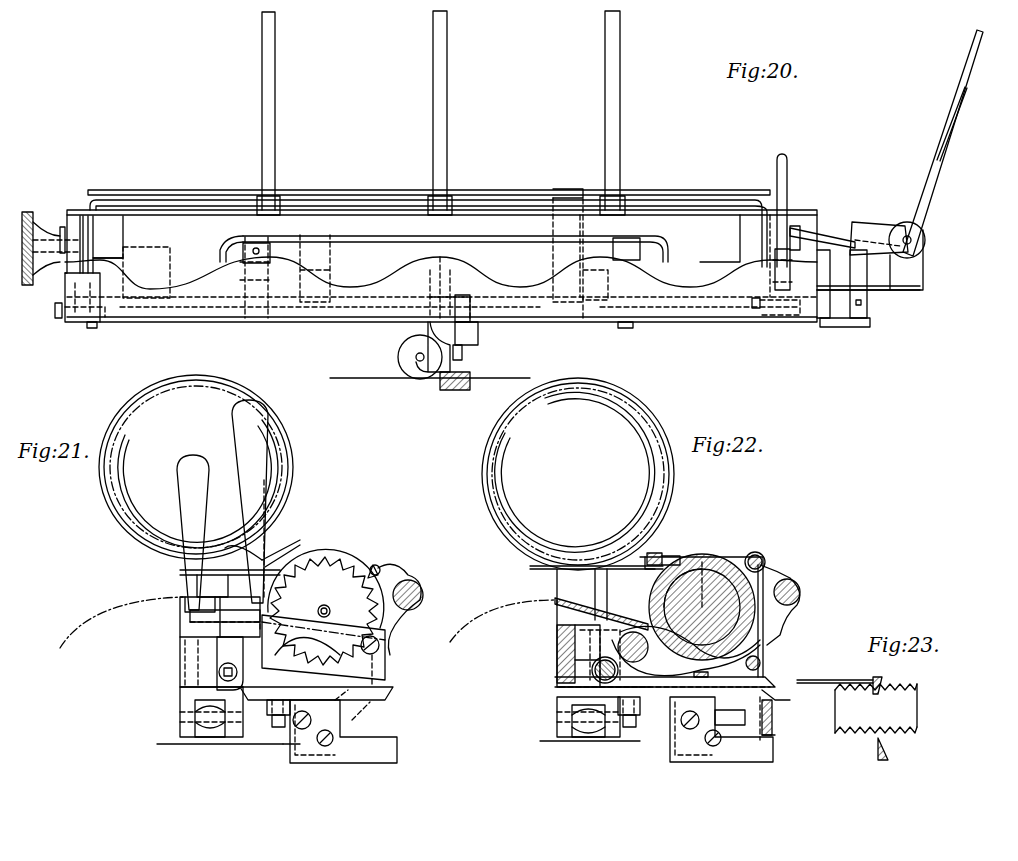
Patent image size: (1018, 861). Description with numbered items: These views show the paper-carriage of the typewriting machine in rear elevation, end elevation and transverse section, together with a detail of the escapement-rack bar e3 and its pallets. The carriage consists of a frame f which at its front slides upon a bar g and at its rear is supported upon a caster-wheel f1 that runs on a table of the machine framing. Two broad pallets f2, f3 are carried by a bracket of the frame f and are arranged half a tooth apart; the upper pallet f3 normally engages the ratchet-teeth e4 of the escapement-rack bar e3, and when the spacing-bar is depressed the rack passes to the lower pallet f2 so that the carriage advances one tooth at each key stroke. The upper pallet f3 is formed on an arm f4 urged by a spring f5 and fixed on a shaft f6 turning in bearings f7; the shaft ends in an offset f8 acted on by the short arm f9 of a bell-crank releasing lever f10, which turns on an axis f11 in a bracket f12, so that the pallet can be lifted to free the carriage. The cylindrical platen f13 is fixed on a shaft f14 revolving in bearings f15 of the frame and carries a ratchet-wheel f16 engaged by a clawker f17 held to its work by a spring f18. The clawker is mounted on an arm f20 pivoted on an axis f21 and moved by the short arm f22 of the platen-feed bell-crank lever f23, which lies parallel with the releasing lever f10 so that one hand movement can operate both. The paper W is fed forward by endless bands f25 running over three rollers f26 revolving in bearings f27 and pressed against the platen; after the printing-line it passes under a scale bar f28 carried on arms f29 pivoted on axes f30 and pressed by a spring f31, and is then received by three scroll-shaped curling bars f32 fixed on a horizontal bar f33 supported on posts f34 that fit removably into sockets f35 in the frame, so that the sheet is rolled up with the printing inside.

In FIG. 20, the frame f is at (441, 266).
In FIG. 21, the frame f is at (330, 630).
In FIG. 22, the frame f is at (565, 672).
In FIG. 20, the caster-wheel f1 is at (400, 345).
In FIG. 21, the caster-wheel f1 is at (212, 738).
In FIG. 22, the caster-wheel f1 is at (590, 738).
In FIG. 20, the lower pallet f2 is at (452, 390).
In FIG. 21, the lower pallet f2 is at (343, 731).
In FIG. 22, the lower pallet f2 is at (721, 729).
In FIG. 23, the lower pallet f2 is at (890, 752).
In FIG. 20, the upper pallet f3 is at (480, 328).
In FIG. 21, the upper pallet f3 is at (358, 690).
In FIG. 23, the upper pallet f3 is at (884, 680).
In FIG. 20, the arm f4 is at (468, 302).
In FIG. 21, the arm f4 is at (269, 710).
In FIG. 22, the arm f4 is at (631, 705).
In FIG. 20, the spring f5 is at (595, 322).
In FIG. 22, the spring f5 is at (724, 715).
In FIG. 23, the spring f5 is at (852, 679).
In FIG. 20, the shaft or spindle f6 is at (845, 327).
In FIG. 21, the shaft or spindle f6 is at (218, 674).
In FIG. 22, the shaft or spindle f6 is at (595, 685).
In FIG. 20, the bearings f7 is at (425, 290).
In FIG. 21, the bearings f7 is at (209, 662).
In FIG. 22, the bearings f7 is at (556, 660).
In FIG. 20, the offset f8 is at (850, 270).
In FIG. 21, the offset f8 is at (215, 650).
In FIG. 20, the short arm f9 is at (878, 228).
In FIG. 22, the short arm f9 is at (712, 680).
In FIG. 20, the bell-crank-releasing lever f10 is at (950, 135).
In FIG. 21, the bell-crank-releasing lever f10 is at (193, 532).
In FIG. 20, the axis of motion f11 is at (912, 240).
In FIG. 21, the axis of motion f11 is at (188, 626).
In FIG. 20, the bracket f12 is at (908, 290).
In FIG. 21, the bracket f12 is at (190, 614).
In FIG. 20, the cylindrical platen f13 is at (408, 253).
In FIG. 21, the cylindrical platen f13 is at (330, 560).
In FIG. 22, the cylindrical platen f13 is at (728, 562).
In FIG. 20, the shaft or spindle f14 is at (78, 244).
In FIG. 21, the shaft or spindle f14 is at (324, 611).
In FIG. 22, the shaft or spindle f14 is at (707, 556).
In FIG. 20, the bearings f15 is at (62, 236).
In FIG. 21, the bearings f15 is at (330, 601).
In FIG. 20, the ratchet-wheel f16 is at (762, 198).
In FIG. 21, the ratchet-wheel f16 is at (323, 613).
In FIG. 20, the clawker or driver f17 is at (788, 160).
In FIG. 20, the spring f18 is at (775, 268).
In FIG. 20, the arm or lever f20 is at (800, 230).
In FIG. 21, the arm or lever f20 is at (380, 650).
In FIG. 21, the axis of motion f21 is at (385, 668).
In FIG. 20, the short arm f22 is at (830, 236).
In FIG. 20, the bell-crank lever f23 is at (974, 46).
In FIG. 21, the bell-crank lever f23 is at (250, 501).
In FIG. 20, the endless bands f25 is at (454, 268).
In FIG. 22, the endless bands f25 is at (758, 555).
In FIG. 20, the rollers f26 is at (514, 190).
In FIG. 21, the rollers f26 is at (335, 655).
In FIG. 22, the rollers f26 is at (630, 630).
In FIG. 20, the bearings f27 is at (255, 210).
In FIG. 21, the bearings f27 is at (376, 562).
In FIG. 20, the bar f28 is at (146, 193).
In FIG. 21, the bar f28 is at (280, 555).
In FIG. 22, the bar f28 is at (668, 553).
In FIG. 20, the arms f29 is at (188, 272).
In FIG. 21, the arms f29 is at (235, 545).
In FIG. 22, the arms f29 is at (646, 565).
In FIG. 20, the axes of motion f30 is at (58, 318).
In FIG. 20, the spring f31 is at (92, 329).
In FIG. 22, the spring f31 is at (665, 689).
In FIG. 20, the bars f32 is at (270, 78).
In FIG. 21, the bars f32 is at (112, 400).
In FIG. 22, the bars f32 is at (652, 405).
In FIG. 20, the horizontal bar f33 is at (431, 256).
In FIG. 21, the horizontal bar f33 is at (175, 572).
In FIG. 22, the horizontal bar f33 is at (580, 575).
In FIG. 20, the legs or posts f34 is at (75, 276).
In FIG. 21, the legs or posts f34 is at (196, 582).
In FIG. 22, the legs or posts f34 is at (582, 594).
In FIG. 20, the holes or sockets f35 is at (67, 290).
In FIG. 21, the holes or sockets f35 is at (188, 652).
In FIG. 22, the holes or sockets f35 is at (557, 640).
In FIG. 21, the sheet of paper W is at (130, 440).
In FIG. 22, the sheet of paper W is at (520, 438).
In FIG. 21, the bar g is at (424, 595).
In FIG. 22, the bar g is at (801, 591).
In FIG. 22, the escapement-rack bar e3 is at (774, 712).
In FIG. 23, the escapement-rack bar e3 is at (876, 708).
In FIG. 22, the ratchet-teeth e4 is at (782, 695).
In FIG. 23, the ratchet-teeth e4 is at (890, 680).